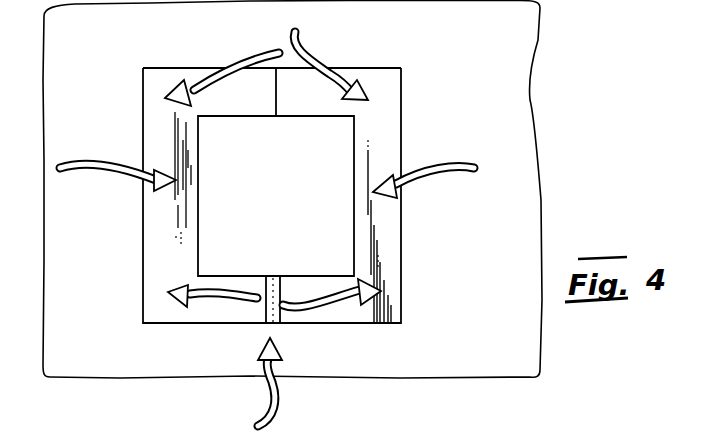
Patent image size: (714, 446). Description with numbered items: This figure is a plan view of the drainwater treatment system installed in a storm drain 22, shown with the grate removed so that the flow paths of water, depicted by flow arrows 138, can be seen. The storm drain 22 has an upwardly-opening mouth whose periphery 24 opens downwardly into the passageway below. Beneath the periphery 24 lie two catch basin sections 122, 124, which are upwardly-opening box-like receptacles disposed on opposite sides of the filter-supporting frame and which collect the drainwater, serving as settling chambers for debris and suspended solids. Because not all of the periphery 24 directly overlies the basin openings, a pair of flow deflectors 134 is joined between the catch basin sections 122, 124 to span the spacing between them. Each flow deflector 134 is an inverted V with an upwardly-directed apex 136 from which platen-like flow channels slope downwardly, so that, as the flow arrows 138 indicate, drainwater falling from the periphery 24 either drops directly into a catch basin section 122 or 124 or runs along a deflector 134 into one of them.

The storm drain 22 is at (398, 125).
The periphery 24 is at (395, 72).
The catch basin section 122 is at (187, 226).
The catch basin section 124 is at (368, 197).
The flow deflector 134 is at (302, 93).
The apex 136 is at (276, 87).
The flow arrows 138 is at (240, 58).